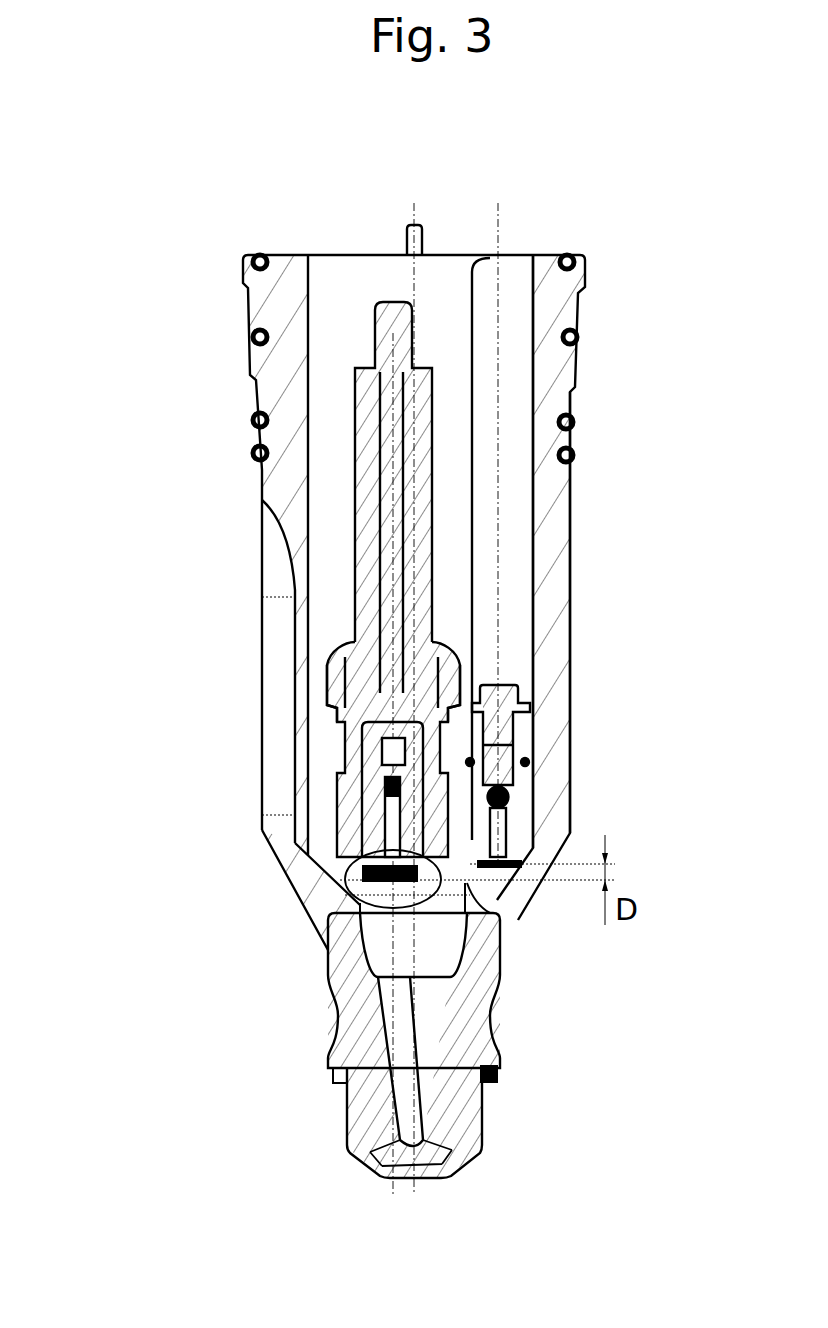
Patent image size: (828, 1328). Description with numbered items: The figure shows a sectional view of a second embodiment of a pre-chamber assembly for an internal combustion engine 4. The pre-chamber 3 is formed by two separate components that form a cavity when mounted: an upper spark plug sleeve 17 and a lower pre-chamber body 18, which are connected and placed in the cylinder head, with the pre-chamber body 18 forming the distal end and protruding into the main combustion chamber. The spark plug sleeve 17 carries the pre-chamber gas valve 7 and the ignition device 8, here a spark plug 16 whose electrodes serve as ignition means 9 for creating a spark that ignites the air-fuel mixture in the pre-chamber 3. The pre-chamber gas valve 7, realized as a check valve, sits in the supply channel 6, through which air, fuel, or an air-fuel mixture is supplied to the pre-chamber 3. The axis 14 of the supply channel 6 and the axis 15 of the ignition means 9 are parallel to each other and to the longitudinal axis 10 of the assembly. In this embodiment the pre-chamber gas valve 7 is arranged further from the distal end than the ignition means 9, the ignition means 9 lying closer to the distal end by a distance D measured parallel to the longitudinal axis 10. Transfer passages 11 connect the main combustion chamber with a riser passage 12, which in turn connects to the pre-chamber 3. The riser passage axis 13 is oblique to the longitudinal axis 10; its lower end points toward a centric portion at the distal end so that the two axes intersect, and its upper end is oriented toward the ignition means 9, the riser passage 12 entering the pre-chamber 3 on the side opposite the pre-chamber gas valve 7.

The internal combustion engine 4 is at (158, 210).
The longitudinal axis of the pre-chamber assembly 10 is at (413, 212).
The axis of the ignition means 15 is at (393, 567).
The spark plug sleeve 17 is at (550, 562).
The ignition means 9 is at (383, 720).
The spark plug 16 is at (393, 693).
The pre-chamber gas valve 7 is at (520, 803).
The ignition device 8 is at (352, 897).
The supply channel 6 is at (480, 888).
The axis of the supply channel 14 is at (470, 883).
The pre-chamber 3 is at (378, 942).
The riser passage 12 is at (383, 1003).
The riser passage axis 13 is at (405, 1090).
The pre-chamber body 18 is at (490, 1062).
The transfer passages 11 is at (380, 1157).